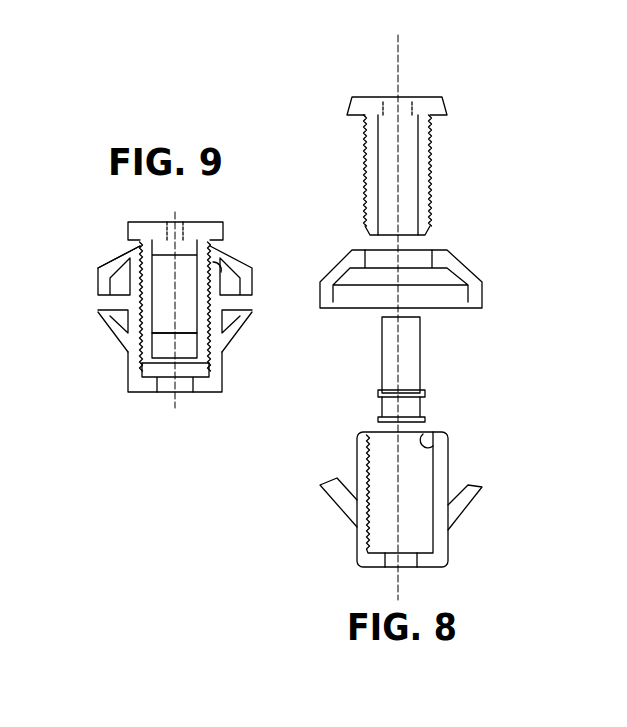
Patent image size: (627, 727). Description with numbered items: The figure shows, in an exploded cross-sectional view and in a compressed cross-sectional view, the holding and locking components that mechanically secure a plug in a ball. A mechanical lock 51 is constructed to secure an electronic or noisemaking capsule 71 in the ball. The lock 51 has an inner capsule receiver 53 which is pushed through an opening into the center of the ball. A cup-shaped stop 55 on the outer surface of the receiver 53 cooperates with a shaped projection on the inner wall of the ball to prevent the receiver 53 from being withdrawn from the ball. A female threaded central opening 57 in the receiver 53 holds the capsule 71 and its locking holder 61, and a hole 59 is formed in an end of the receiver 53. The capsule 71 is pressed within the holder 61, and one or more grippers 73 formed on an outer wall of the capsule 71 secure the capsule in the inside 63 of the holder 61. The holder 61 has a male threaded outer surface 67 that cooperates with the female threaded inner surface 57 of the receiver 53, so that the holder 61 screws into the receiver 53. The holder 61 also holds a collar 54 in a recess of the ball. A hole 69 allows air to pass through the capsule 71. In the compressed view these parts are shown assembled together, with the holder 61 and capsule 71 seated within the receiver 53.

In FIG. 8, the mechanical lock 51 is at (513, 273).
In FIG. 8, the inner capsule receiver 53 is at (448, 453).
In FIG. 9, the inner capsule receiver 53 is at (222, 365).
In FIG. 9, the collar 54 is at (117, 257).
In FIG. 8, the cup-shaped stop 55 is at (467, 508).
In FIG. 9, the cup-shaped stop 55 is at (245, 330).
In FIG. 8, the female threaded central opening 57 is at (430, 432).
In FIG. 8, the hole 59 is at (407, 567).
In FIG. 8, the locking holder 61 is at (445, 132).
In FIG. 9, the locking holder 61 is at (225, 223).
In FIG. 8, the inside of the holder 63 is at (385, 165).
In FIG. 8, the male threaded outer surface 67 is at (433, 195).
In FIG. 9, the male threaded outer surface 67 is at (208, 282).
In FIG. 8, the hole 69 is at (398, 97).
In FIG. 8, the capsule 71 is at (425, 363).
In FIG. 9, the capsule 71 is at (155, 305).
In FIG. 8, the grippers 73 is at (423, 392).